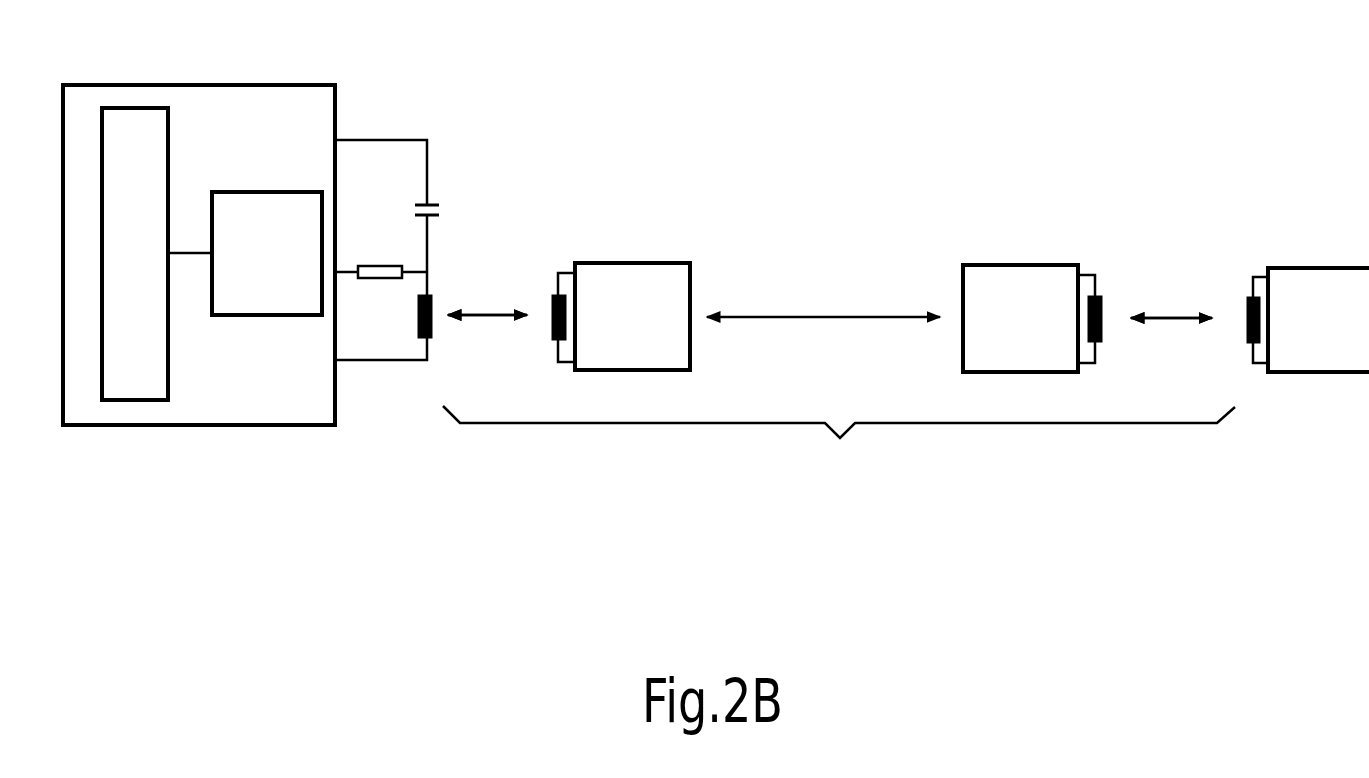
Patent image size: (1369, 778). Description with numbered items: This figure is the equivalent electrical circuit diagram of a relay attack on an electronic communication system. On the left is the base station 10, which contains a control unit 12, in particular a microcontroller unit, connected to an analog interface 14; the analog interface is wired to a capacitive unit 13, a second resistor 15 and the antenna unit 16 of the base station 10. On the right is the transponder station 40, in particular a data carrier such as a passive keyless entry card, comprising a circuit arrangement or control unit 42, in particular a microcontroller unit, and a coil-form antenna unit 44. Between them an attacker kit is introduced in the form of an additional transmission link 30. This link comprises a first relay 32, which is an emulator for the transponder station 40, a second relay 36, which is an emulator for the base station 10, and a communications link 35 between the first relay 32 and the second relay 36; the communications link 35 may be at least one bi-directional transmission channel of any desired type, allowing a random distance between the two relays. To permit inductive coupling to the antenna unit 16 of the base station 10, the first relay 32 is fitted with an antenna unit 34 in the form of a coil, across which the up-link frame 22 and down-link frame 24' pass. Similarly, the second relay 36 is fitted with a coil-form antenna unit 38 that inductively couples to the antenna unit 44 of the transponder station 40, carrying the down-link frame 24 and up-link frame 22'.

The base station 10 is at (199, 212).
The control unit 12 is at (149, 268).
The capacitive unit 13 is at (439, 210).
The analog interface 14 is at (279, 268).
The second resistor 15 is at (383, 265).
The antenna unit 16 is at (418, 312).
The up-link frame 22 is at (492, 354).
The up-link frame 22' is at (1177, 356).
The down-link frame 24 is at (1168, 356).
The down-link frame 24' is at (482, 354).
The additional transmission link 30 is at (839, 350).
The first relay 32 is at (646, 331).
The antenna unit 34 is at (548, 305).
The communications link 35 is at (825, 315).
The second relay 36 is at (1034, 331).
The antenna unit 38 is at (1103, 310).
The transponder station 40 is at (1292, 272).
The circuit arrangement 42 is at (1339, 334).
The antenna unit 44 is at (1245, 312).